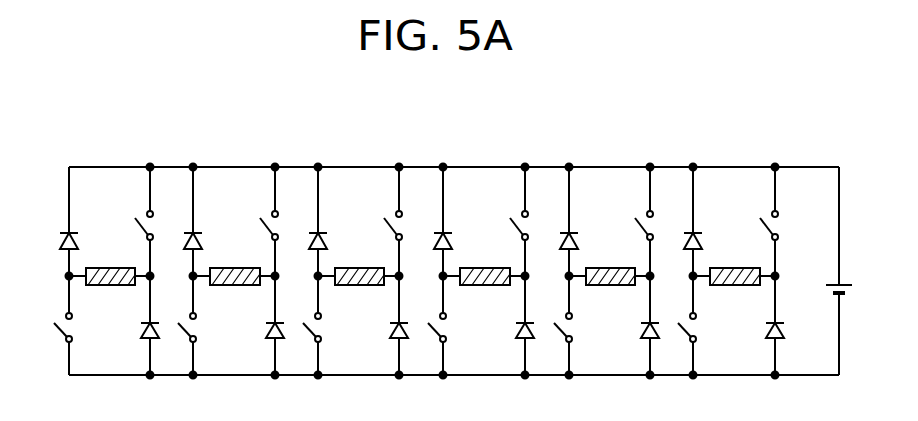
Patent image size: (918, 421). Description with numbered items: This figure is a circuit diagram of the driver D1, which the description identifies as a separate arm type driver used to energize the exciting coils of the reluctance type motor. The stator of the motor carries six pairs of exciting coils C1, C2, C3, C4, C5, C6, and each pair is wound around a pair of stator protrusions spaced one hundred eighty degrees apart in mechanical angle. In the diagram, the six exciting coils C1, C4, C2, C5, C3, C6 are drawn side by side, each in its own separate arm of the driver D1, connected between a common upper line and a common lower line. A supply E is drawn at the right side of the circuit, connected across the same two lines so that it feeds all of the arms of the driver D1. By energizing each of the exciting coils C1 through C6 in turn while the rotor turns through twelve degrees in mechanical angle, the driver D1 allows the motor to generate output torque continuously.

The exciting coil C1 is at (106, 271).
The exciting coil C2 is at (355, 271).
The exciting coil C3 is at (606, 271).
The exciting coil C4 is at (231, 271).
The exciting coil C5 is at (481, 271).
The exciting coil C6 is at (731, 271).
The driver D1 is at (446, 240).
The power supply E is at (851, 271).